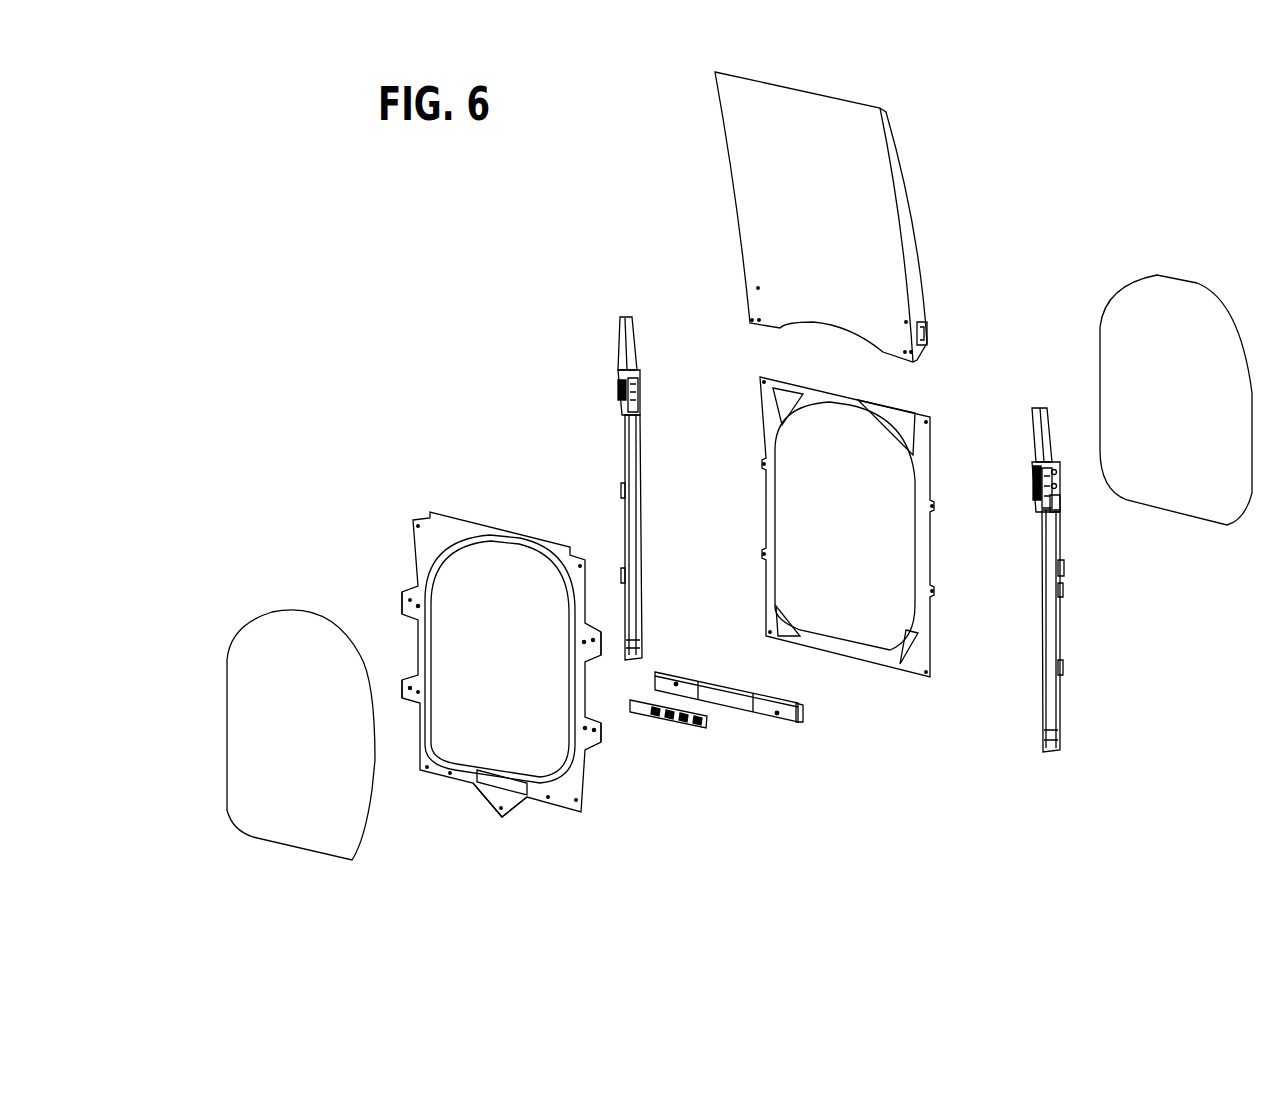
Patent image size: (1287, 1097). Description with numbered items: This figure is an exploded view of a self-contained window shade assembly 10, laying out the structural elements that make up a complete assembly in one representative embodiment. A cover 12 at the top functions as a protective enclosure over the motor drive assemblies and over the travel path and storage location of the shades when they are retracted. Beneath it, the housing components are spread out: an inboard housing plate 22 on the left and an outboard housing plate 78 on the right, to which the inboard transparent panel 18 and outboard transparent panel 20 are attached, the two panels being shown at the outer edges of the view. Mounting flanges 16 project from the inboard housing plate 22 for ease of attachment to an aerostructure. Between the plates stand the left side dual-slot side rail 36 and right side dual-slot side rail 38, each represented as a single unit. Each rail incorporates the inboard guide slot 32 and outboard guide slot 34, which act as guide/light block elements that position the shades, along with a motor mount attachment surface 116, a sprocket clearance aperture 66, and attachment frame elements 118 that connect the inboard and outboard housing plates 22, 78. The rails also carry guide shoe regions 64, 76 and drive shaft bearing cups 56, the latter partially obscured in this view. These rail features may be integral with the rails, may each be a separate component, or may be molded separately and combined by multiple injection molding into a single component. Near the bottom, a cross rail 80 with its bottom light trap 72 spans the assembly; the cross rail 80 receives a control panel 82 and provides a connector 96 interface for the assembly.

The window shade assembly 10 is at (365, 272).
The cover 12 is at (752, 208).
The mounting flanges 16 is at (407, 588).
The inboard transparent panel 18 is at (262, 625).
The outboard transparent panel 20 is at (1108, 345).
The inboard housing plate 22 is at (450, 525).
The inboard guide slot 32 is at (633, 318).
The outboard guide slot 34 is at (622, 318).
The left side dual-slot side rail 36 is at (623, 485).
The right side dual-slot side rail 38 is at (1062, 568).
The drive shaft bearing cups 56 is at (1056, 485).
The guide shoe region 64 is at (1020, 443).
The sprocket clearance apertures 66 is at (620, 396).
The bottom light trap 72 is at (797, 703).
The guide shoe region 76 is at (655, 364).
The outboard housing plate 78 is at (840, 400).
The cross rail 80 is at (804, 720).
The control panel 82 is at (706, 727).
The connector 96 is at (791, 745).
The motor mount attachment surfaces 116 is at (637, 400).
The attachment frame elements 118 is at (624, 492).